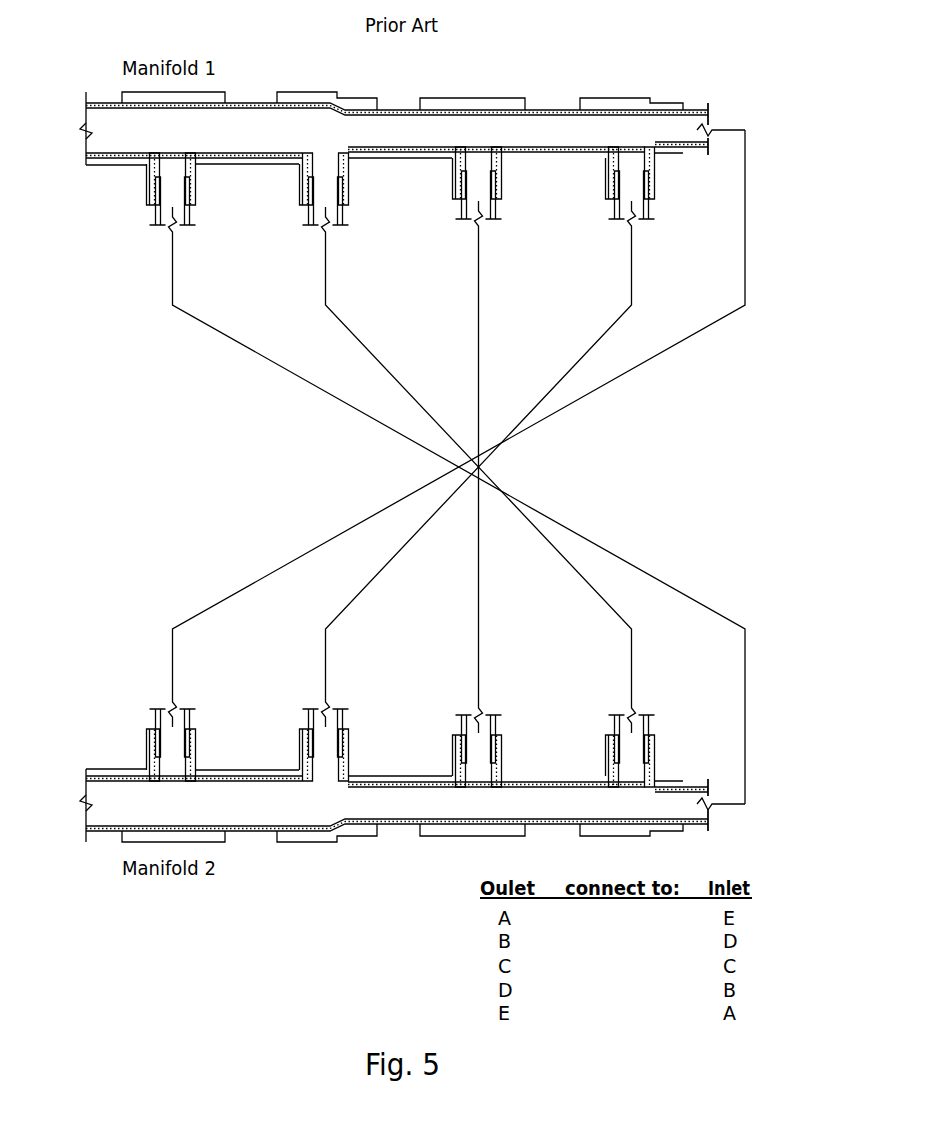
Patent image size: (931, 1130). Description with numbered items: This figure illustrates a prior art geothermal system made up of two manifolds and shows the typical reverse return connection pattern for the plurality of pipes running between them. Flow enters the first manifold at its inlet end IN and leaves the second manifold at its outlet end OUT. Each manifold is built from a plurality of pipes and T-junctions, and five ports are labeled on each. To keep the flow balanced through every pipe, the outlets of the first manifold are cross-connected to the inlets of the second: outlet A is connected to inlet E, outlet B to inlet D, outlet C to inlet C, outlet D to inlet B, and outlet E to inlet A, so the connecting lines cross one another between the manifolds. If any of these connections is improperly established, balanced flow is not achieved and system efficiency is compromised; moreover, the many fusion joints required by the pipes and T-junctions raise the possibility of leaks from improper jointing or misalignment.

The outlet A / inlet A is at (171, 467).
The outlet B / inlet B is at (324, 467).
The outlet C / inlet C is at (477, 467).
The outlet D / inlet D is at (630, 467).
The outlet E / inlet E is at (712, 467).
The inlet of manifold 1 IN is at (101, 133).
The outlet of manifold 2 OUT is at (112, 805).